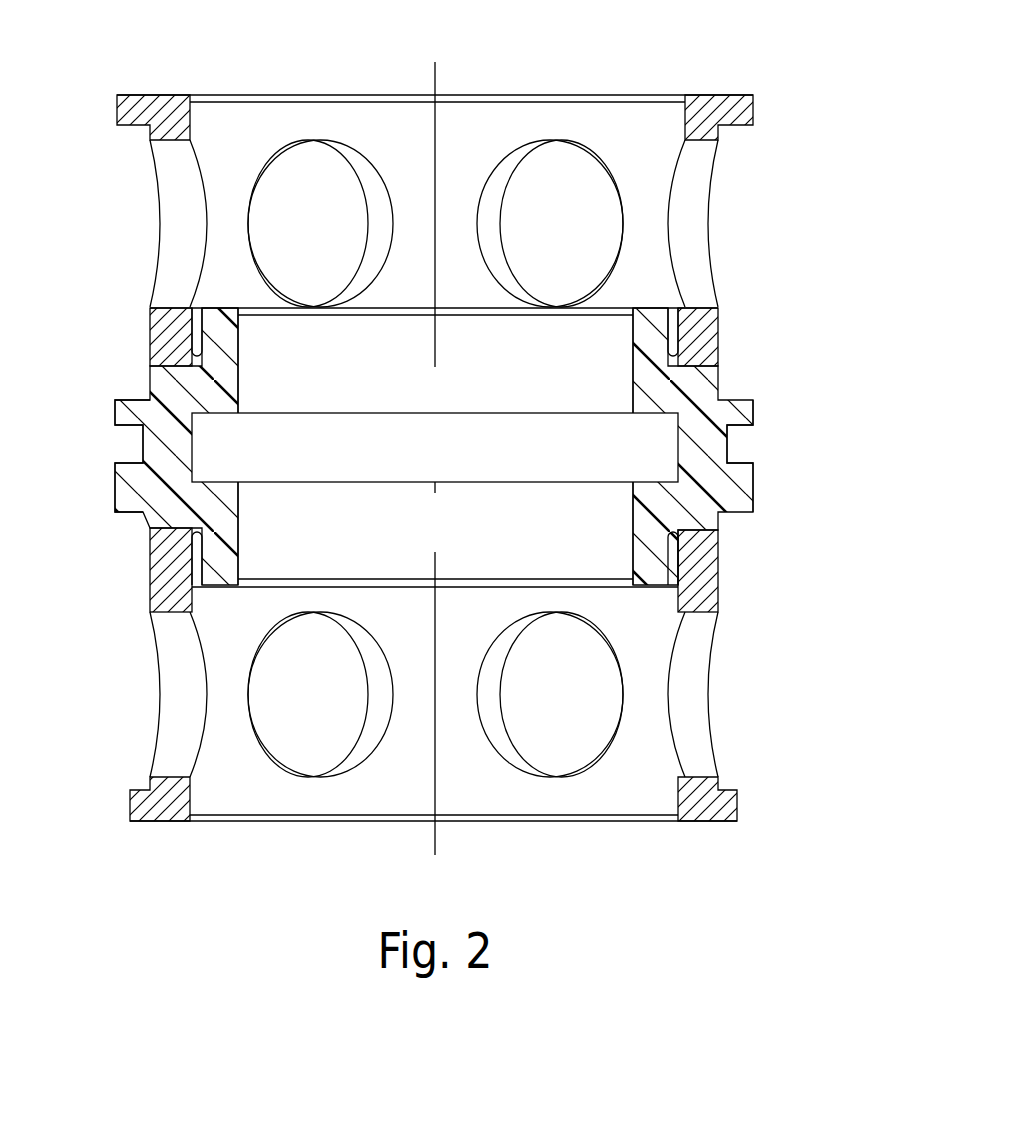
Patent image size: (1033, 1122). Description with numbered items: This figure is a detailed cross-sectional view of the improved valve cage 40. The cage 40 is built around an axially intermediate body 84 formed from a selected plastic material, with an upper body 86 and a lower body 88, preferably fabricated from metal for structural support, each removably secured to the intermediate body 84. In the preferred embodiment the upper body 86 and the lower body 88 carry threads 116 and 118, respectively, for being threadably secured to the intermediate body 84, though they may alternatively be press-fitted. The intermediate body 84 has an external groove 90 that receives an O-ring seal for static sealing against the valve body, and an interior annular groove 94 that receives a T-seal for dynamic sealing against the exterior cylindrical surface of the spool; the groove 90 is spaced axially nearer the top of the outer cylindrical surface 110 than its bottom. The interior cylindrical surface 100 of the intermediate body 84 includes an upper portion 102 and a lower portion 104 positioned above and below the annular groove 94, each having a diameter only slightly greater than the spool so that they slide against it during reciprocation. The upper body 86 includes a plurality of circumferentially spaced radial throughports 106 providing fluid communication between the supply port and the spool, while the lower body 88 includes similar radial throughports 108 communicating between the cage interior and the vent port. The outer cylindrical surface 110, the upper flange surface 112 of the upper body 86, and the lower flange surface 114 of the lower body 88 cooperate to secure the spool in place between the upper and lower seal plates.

The cage 40 is at (752, 168).
The intermediate body 84 is at (753, 483).
The upper body 86 is at (705, 338).
The lower body 88 is at (717, 802).
The external groove 90 is at (727, 450).
The interior annular groove 94 is at (678, 440).
The interior cylindrical surface 100 is at (238, 380).
The upper portion 102 is at (633, 372).
The lower portion 104 is at (633, 526).
The radial throughports 106 is at (733, 235).
The radial throughports 108 is at (733, 697).
The outer cylindrical surface 110 is at (117, 418).
The upper flange surface 112 is at (117, 111).
The lower flange surface 114 is at (130, 808).
The threads 116 is at (190, 312).
The threads 118 is at (190, 563).